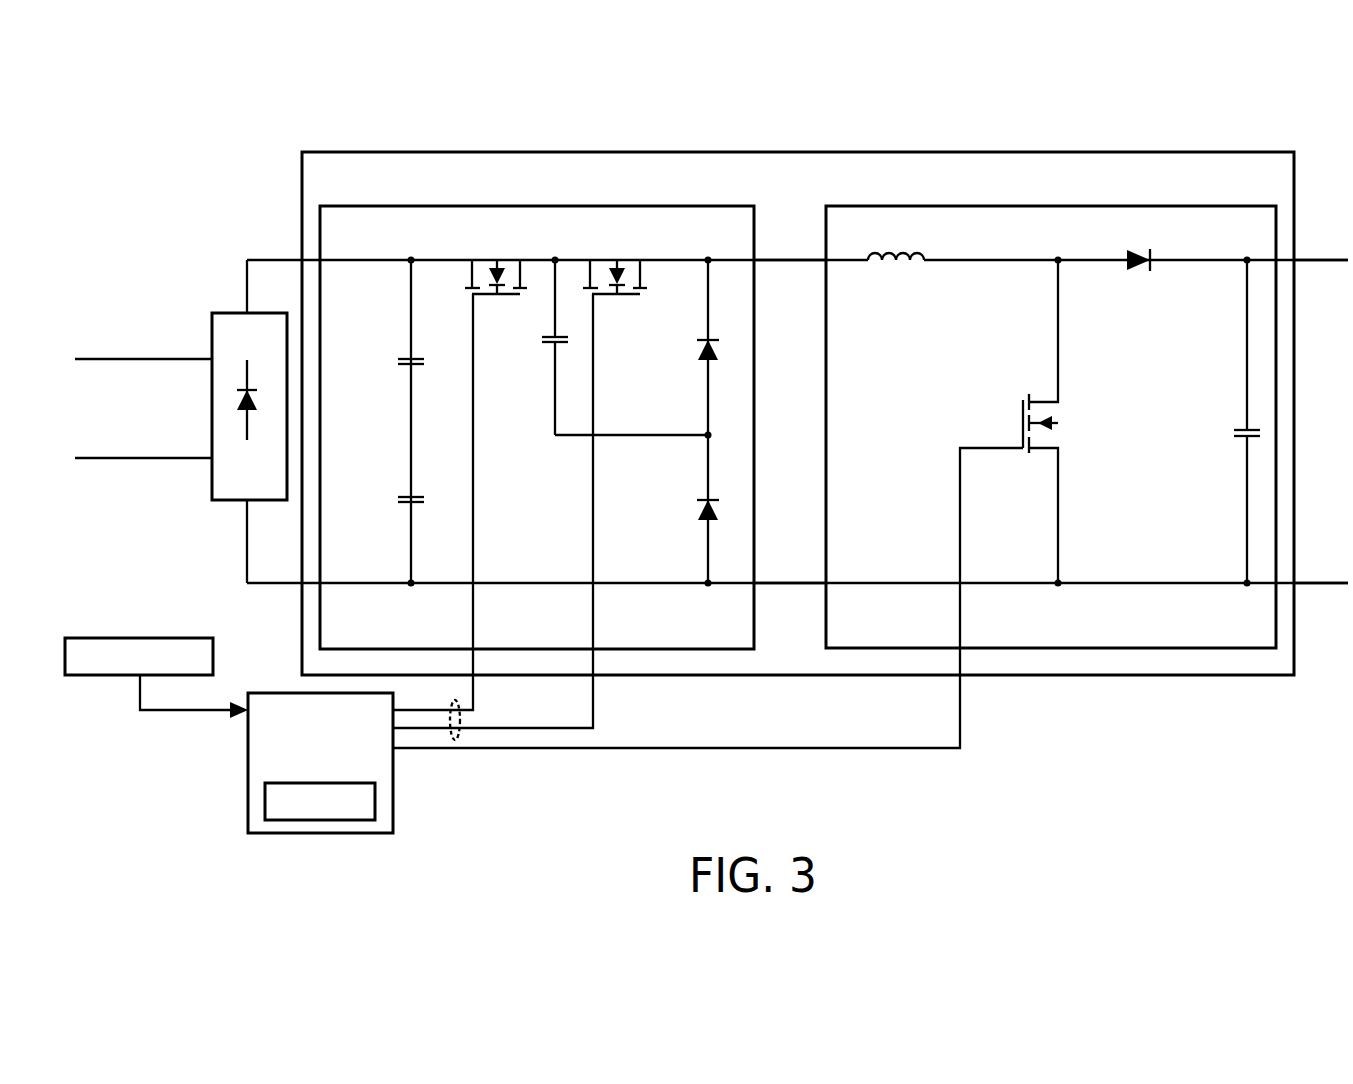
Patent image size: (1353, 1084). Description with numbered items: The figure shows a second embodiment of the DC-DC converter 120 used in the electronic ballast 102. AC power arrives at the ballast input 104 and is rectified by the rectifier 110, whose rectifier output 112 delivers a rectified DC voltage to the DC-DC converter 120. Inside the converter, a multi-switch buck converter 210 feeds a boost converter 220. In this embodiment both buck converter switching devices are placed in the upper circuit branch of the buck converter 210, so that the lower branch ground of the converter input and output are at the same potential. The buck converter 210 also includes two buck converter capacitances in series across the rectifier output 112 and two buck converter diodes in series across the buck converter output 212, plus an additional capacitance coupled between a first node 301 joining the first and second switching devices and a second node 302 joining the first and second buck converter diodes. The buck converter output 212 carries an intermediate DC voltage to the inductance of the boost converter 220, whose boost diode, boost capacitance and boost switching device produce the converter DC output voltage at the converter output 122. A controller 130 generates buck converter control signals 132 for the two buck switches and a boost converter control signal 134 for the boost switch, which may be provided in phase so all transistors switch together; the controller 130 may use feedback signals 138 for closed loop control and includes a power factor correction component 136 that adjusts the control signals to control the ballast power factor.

The electronic ballast 102 is at (128, 110).
The ballast input 104 is at (92, 502).
The rectifier 110 is at (228, 313).
The rectifier output 112 is at (232, 254).
The DC-DC converter 120 is at (302, 175).
The converter output 122 is at (1326, 670).
The controller 130 is at (248, 731).
The buck converter control signals 132 is at (455, 760).
The boost converter control signal 134 is at (568, 748).
The power factor correction component 136 is at (265, 802).
The feedback signals 138 is at (138, 638).
The buck converter 210 is at (320, 222).
The buck converter output 212 is at (786, 634).
The boost converter 220 is at (826, 225).
The first node 301 is at (557, 258).
The second node 302 is at (706, 433).